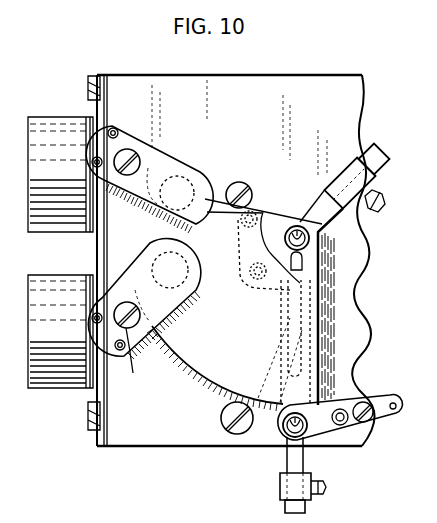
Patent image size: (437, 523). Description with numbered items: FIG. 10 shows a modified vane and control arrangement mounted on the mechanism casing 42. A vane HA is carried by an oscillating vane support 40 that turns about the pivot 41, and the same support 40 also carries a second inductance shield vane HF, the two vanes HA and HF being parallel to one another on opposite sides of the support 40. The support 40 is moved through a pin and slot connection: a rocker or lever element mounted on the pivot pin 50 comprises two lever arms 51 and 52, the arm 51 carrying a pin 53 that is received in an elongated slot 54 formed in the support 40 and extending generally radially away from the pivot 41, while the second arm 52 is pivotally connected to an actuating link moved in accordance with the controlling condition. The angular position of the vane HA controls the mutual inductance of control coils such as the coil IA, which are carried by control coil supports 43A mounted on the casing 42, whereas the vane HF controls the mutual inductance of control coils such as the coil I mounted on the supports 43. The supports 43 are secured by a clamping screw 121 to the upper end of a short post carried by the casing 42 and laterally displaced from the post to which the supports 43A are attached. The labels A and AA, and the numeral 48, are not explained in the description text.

The mechanism casing 42 is at (236, 78).
The clamping screw 121 is at (116, 260).
The upper bracket A is at (55, 117).
The lower bracket AA is at (62, 275).
The control coil I is at (172, 152).
The control coil IA is at (200, 292).
The control coil support 43 is at (122, 134).
The control coil support 43A is at (112, 284).
The tail of lower lever 48 is at (122, 361).
The inductance shield vane HF is at (237, 182).
The vane HA is at (197, 350).
The vane support 40 is at (274, 217).
The pivot 41 is at (309, 216).
The pin 53 is at (292, 264).
The elongated slot 54 is at (283, 348).
The pivot pin 50 is at (288, 437).
The lever arm 51 is at (304, 460).
The lever arm 52 is at (388, 412).